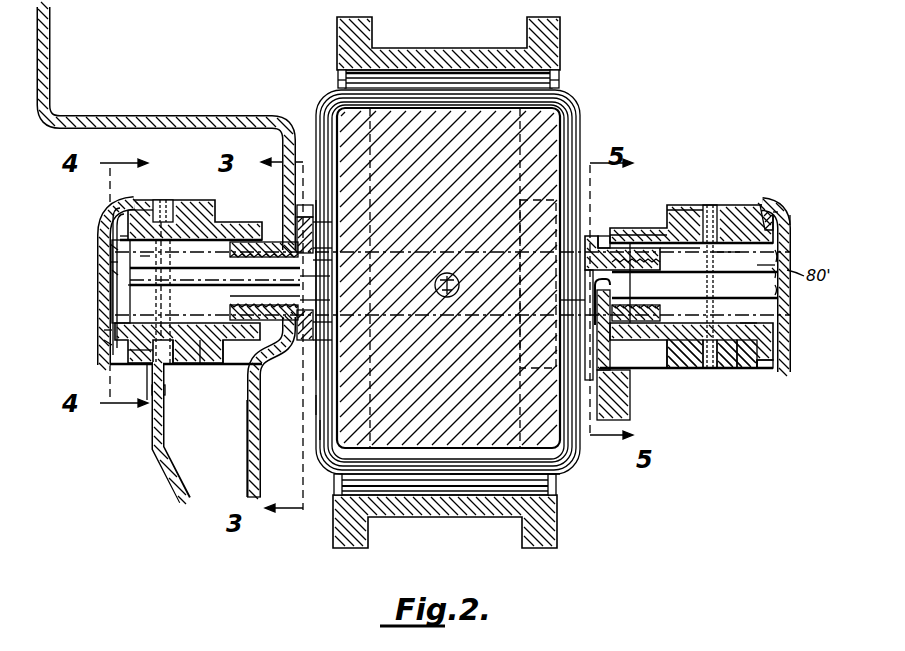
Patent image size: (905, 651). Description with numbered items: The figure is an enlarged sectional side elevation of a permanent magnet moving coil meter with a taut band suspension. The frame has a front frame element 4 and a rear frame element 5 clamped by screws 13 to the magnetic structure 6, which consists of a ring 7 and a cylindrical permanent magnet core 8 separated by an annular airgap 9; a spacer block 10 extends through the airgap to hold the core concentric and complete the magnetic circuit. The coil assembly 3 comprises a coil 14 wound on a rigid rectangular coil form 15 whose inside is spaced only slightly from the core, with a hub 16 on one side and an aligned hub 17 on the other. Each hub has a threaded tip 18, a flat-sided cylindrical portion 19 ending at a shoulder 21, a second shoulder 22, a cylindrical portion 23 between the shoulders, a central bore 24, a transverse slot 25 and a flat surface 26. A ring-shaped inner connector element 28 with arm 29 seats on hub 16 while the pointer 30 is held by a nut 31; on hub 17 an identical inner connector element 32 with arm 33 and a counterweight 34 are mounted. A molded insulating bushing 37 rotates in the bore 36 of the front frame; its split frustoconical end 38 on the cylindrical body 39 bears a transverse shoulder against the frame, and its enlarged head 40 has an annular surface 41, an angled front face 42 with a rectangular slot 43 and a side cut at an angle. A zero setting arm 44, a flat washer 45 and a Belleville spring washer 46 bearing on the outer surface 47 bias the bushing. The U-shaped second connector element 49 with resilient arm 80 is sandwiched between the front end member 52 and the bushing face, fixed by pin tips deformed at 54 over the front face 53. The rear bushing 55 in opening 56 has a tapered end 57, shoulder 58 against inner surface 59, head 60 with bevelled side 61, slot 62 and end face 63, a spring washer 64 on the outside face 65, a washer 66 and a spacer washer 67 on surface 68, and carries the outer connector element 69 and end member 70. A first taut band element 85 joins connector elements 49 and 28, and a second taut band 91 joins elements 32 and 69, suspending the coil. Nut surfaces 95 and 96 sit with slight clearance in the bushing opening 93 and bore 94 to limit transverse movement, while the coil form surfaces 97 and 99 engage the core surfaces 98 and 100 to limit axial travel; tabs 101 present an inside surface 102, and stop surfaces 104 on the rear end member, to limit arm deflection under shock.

The coil assembly 3 is at (462, 86).
The front frame element 4 is at (171, 406).
The rear frame element 5 is at (660, 369).
The magnetic structure 6 is at (410, 522).
The ring 7 is at (466, 519).
The permanent magnet core 8 is at (568, 125).
The annular airgap 9 is at (560, 72).
The spacer block 10 is at (478, 242).
The screws 13 is at (318, 300).
The coil 14 is at (322, 92).
The coil form 15 is at (338, 116).
The hub 16 is at (232, 270).
The hub 17 is at (700, 273).
The threaded cylindrical tip 18 is at (232, 296).
The cylindrical portion 19 is at (296, 232).
The transverse annular shoulder 21 is at (297, 212).
The second shoulder 22 is at (320, 340).
The cylindrical portion 23 is at (318, 248).
The central bore 24 is at (320, 260).
The transverse slot 25 is at (285, 362).
The flat outwardly facing surface 26 is at (318, 276).
The inner connector element 28 is at (316, 224).
The radially inwardly projecting arm 29 is at (320, 322).
The pointer 30 is at (145, 113).
The nut 31 is at (232, 316).
The inner connector element 32 is at (592, 236).
The radially inwardly projecting arm 33 is at (578, 300).
The counterweight 34 is at (247, 472).
The cylindrical bore 36 is at (205, 365).
The bushing 37 is at (145, 366).
The frustoconical inner end 38 is at (228, 365).
The cylindrical body 39 is at (180, 200).
The enlarged head 40 is at (228, 212).
The transverse annular surface 41 is at (160, 201).
The front face 42 is at (124, 200).
The rectangular slot 43 is at (112, 216).
The zero setting arm 44 is at (152, 434).
The flat washer 45 is at (168, 380).
The Belleville-type spring washer 46 is at (176, 365).
The outer surface 47 is at (176, 200).
The second connector element 49 is at (128, 284).
The front end member 52 is at (106, 246).
The front face 53 is at (108, 270).
The deformed pin tips 54 is at (104, 330).
The bushing 55 is at (766, 372).
The cylindrical opening 56 is at (706, 205).
The tapered end 57 is at (640, 228).
The transverse shoulder 58 is at (672, 204).
The inner surface 59 is at (655, 226).
The head 60 is at (736, 205).
The bevelled side 61 is at (778, 210).
The rectangular slot 62 is at (762, 205).
The end face 63 is at (791, 340).
The Belleville-type spring washer 64 is at (710, 370).
The outside face 65 is at (682, 370).
The washer 66 is at (737, 370).
The spacer washer 67 is at (757, 372).
The transverse surface 68 is at (742, 326).
The outer connector element 69 is at (787, 256).
The end member 70 is at (786, 220).
The arm 80 is at (112, 284).
The first taut band element 85 is at (147, 257).
The second taut band 91 is at (730, 254).
The central cylindrical opening 93 is at (108, 342).
The bore 94 is at (758, 286).
The external surface 95 is at (232, 250).
The external surface 96 is at (672, 246).
The inside front surface 97 is at (320, 428).
The front surface 98 is at (318, 404).
The rear inside surface 99 is at (570, 460).
The rear surface 100 is at (560, 412).
The tabs 101 is at (106, 262).
The inside surface 102 is at (117, 238).
The stop surfaces 104 is at (788, 290).